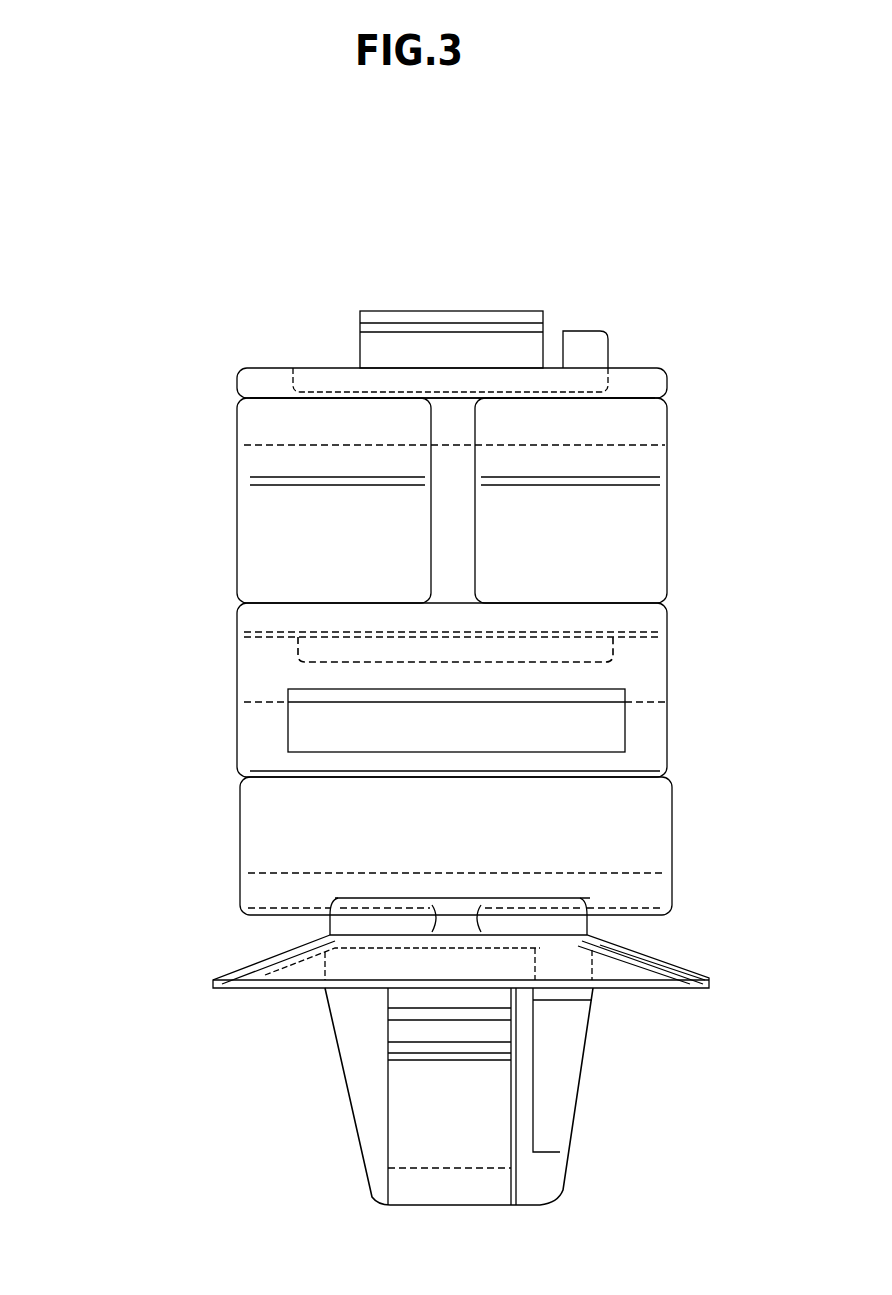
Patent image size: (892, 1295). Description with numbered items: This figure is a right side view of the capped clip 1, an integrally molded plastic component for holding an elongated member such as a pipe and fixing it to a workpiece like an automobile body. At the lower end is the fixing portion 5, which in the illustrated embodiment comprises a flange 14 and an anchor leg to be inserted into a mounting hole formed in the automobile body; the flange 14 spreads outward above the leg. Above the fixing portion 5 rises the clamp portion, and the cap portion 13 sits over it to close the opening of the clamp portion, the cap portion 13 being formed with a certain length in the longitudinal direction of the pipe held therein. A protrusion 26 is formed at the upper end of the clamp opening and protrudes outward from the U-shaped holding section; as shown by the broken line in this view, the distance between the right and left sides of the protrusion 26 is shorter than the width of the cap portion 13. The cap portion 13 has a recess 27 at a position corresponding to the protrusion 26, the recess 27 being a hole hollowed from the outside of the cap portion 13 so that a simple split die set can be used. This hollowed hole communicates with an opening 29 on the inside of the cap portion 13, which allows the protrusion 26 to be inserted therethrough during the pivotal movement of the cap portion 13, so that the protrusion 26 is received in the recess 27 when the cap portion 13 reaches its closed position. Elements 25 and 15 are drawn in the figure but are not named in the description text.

The capped clip 1 is at (547, 293).
The cap portion 13 is at (228, 497).
The connecting rib 25 is at (458, 541).
The protrusion 26 is at (625, 654).
The opening 29 is at (545, 695).
The recess 27 is at (507, 727).
The fixing portion 5 is at (199, 1032).
The flange 14 is at (260, 963).
The leg portion 15 is at (352, 1110).